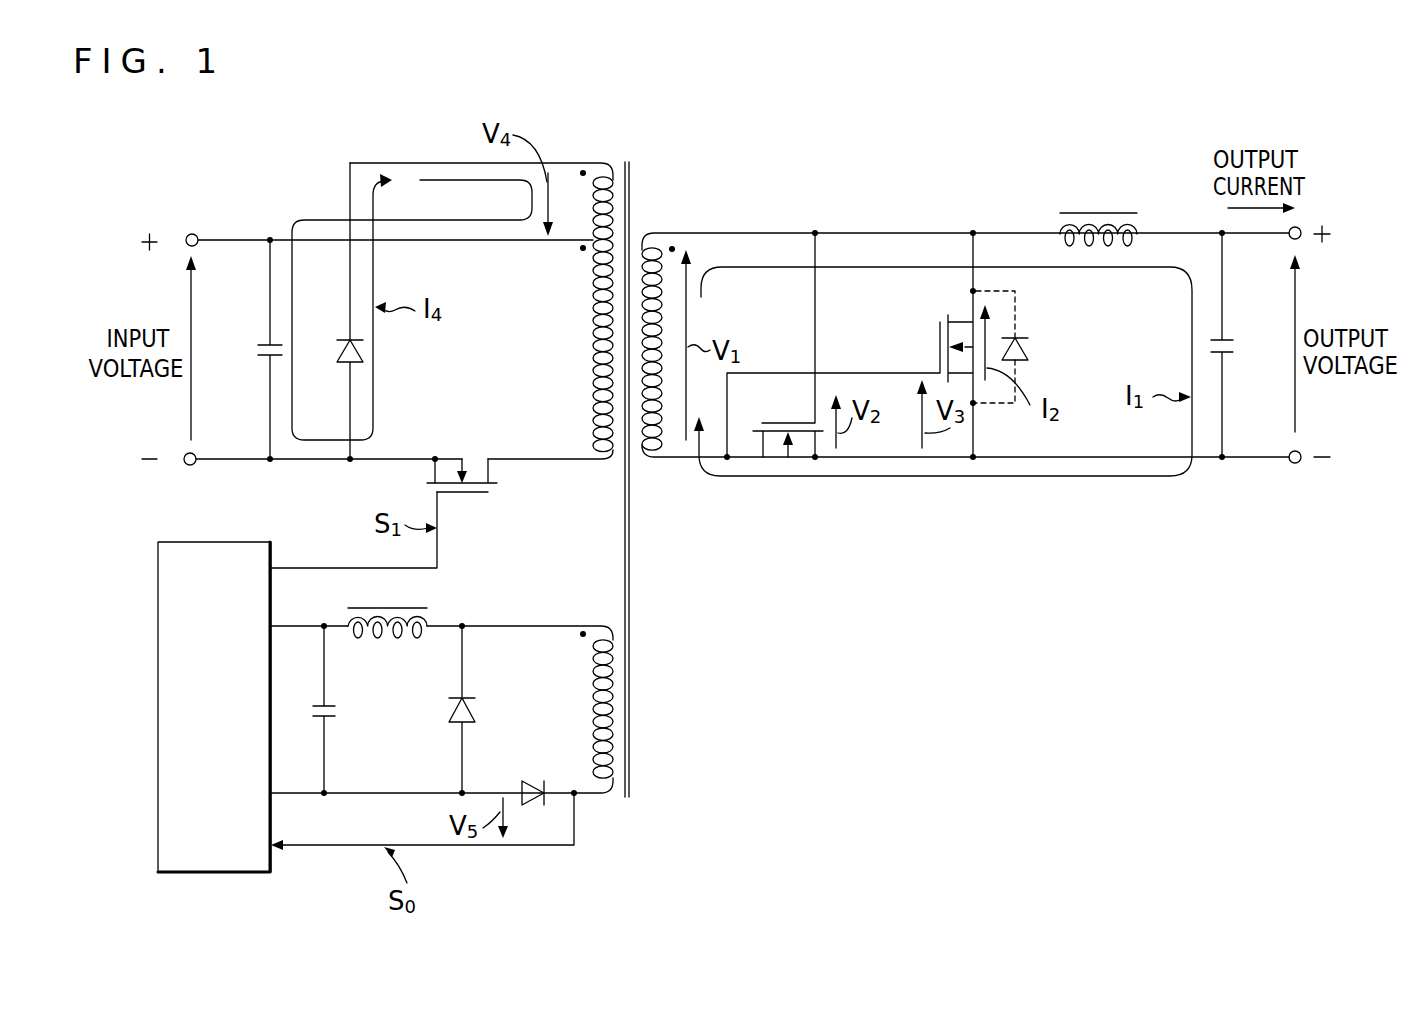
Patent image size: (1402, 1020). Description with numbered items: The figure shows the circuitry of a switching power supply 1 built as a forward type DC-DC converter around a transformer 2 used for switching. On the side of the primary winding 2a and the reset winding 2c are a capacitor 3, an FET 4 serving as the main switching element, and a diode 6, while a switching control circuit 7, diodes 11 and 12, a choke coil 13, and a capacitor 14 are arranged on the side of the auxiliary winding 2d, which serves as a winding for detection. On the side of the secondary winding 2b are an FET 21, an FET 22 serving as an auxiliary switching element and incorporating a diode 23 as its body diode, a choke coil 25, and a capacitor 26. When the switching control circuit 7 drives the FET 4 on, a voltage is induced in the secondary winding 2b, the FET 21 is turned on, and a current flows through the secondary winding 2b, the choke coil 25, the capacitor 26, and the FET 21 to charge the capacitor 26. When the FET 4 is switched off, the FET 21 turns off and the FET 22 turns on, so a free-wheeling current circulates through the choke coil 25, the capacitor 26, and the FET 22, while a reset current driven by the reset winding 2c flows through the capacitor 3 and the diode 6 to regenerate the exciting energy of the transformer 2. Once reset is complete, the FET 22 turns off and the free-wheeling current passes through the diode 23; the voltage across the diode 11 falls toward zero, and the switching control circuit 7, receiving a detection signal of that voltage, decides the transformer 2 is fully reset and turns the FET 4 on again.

The power supply 1 is at (262, 158).
The transformer 2 is at (626, 152).
The primary winding 2a is at (597, 447).
The secondary winding 2b is at (658, 447).
The reset winding 2c is at (592, 193).
The auxiliary winding 2d is at (593, 700).
The capacitor 3 is at (262, 343).
The FET 4 is at (468, 495).
The diode 6 is at (346, 340).
The switching control circuit 7 is at (192, 542).
The diode 11 is at (545, 785).
The diode 12 is at (470, 698).
The choke coil 13 is at (415, 607).
The capacitor 14 is at (333, 706).
The FET 21 is at (797, 422).
The FET 22 is at (960, 318).
The diode 23 is at (1022, 338).
The choke coil 25 is at (1125, 213).
The capacitor 26 is at (1230, 343).